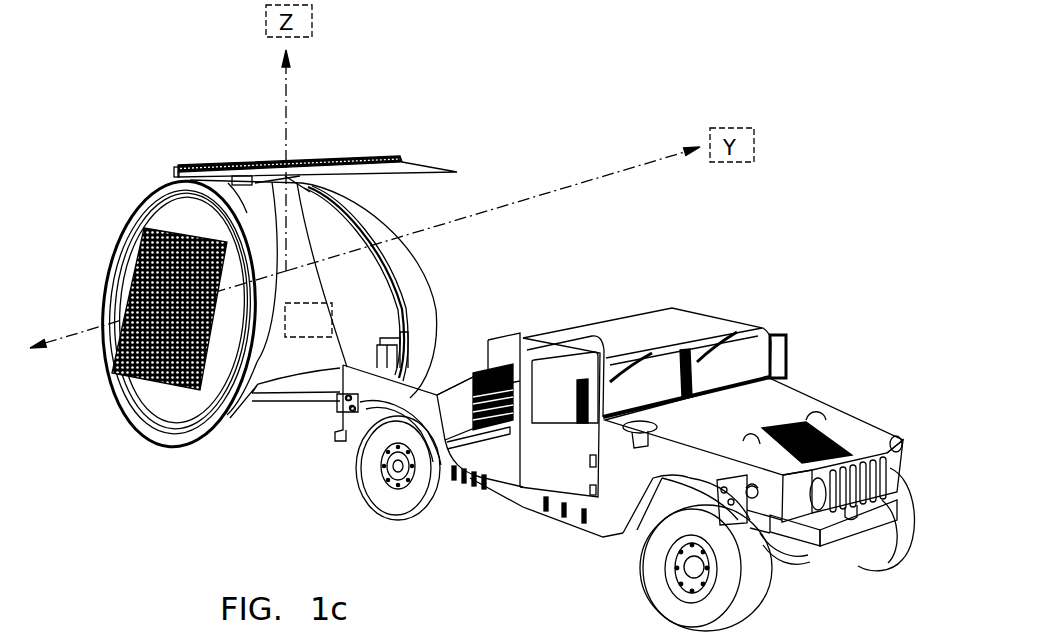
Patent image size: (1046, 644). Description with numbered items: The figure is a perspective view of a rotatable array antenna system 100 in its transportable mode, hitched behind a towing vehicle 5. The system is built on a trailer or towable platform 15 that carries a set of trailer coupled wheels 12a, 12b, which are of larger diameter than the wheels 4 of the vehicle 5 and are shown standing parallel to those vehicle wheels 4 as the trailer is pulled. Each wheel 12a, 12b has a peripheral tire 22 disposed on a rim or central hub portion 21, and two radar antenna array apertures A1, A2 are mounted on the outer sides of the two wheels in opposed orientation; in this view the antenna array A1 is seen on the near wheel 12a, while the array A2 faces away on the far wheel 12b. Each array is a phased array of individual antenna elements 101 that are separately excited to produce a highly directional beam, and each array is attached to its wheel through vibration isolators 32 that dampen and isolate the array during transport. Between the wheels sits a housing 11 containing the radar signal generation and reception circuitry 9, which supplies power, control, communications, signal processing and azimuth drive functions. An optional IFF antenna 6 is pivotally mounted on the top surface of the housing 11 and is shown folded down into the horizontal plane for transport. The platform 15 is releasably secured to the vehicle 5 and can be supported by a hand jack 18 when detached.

The rotatable array antenna system 100 is at (470, 92).
The vehicle 5 is at (805, 300).
The vehicle wheels 4 is at (385, 499).
The IFF antenna 6 is at (275, 158).
The peripheral tire 22 is at (217, 163).
The housing 11 is at (310, 247).
The trailer coupled wheel 12a is at (95, 345).
The trailer coupled wheel 12b is at (432, 262).
The antenna elements 101 is at (115, 378).
The vibration isolators 32 is at (152, 431).
The rim or central hub portion 21 is at (198, 224).
The radar signal generation and reception circuitry 9 is at (308, 320).
The hand jack 18 is at (404, 348).
The trailer or towable platform 15 is at (295, 417).
The radar antenna array aperture A1 is at (120, 274).
The radar antenna array aperture A2 is at (428, 216).